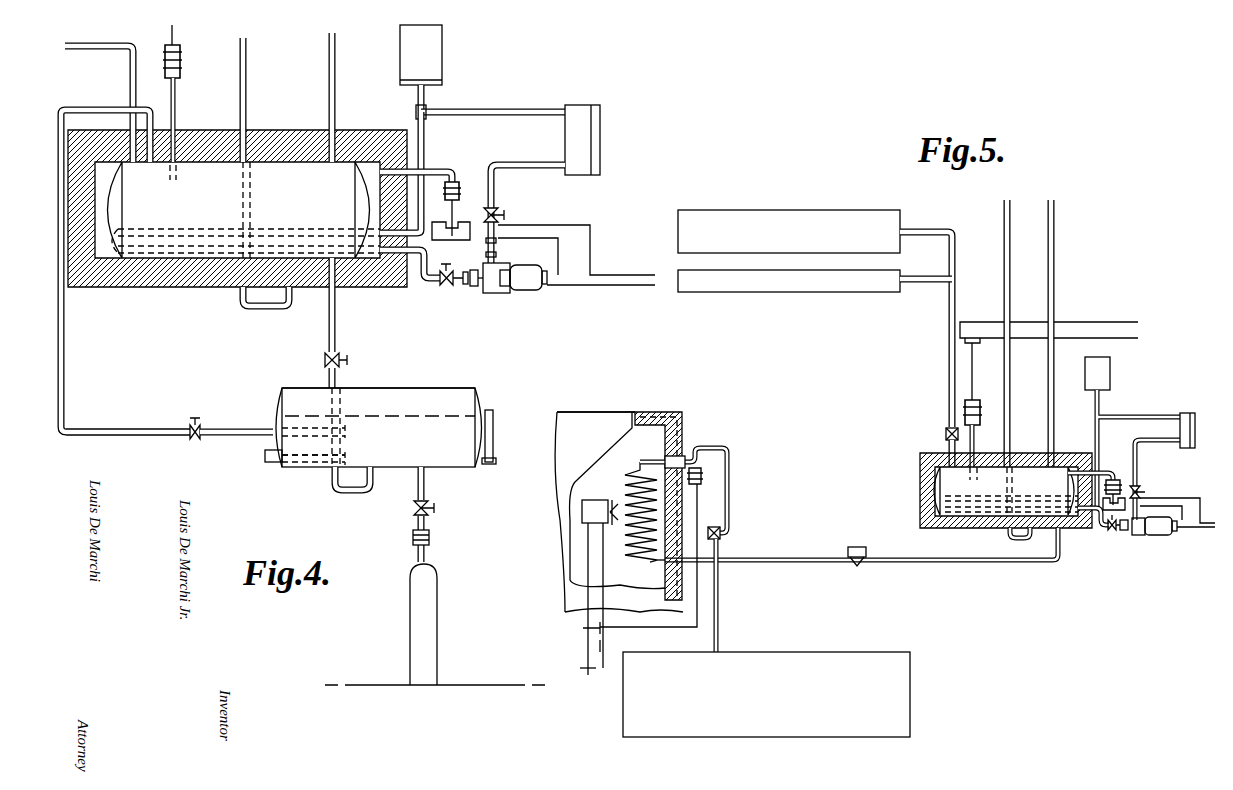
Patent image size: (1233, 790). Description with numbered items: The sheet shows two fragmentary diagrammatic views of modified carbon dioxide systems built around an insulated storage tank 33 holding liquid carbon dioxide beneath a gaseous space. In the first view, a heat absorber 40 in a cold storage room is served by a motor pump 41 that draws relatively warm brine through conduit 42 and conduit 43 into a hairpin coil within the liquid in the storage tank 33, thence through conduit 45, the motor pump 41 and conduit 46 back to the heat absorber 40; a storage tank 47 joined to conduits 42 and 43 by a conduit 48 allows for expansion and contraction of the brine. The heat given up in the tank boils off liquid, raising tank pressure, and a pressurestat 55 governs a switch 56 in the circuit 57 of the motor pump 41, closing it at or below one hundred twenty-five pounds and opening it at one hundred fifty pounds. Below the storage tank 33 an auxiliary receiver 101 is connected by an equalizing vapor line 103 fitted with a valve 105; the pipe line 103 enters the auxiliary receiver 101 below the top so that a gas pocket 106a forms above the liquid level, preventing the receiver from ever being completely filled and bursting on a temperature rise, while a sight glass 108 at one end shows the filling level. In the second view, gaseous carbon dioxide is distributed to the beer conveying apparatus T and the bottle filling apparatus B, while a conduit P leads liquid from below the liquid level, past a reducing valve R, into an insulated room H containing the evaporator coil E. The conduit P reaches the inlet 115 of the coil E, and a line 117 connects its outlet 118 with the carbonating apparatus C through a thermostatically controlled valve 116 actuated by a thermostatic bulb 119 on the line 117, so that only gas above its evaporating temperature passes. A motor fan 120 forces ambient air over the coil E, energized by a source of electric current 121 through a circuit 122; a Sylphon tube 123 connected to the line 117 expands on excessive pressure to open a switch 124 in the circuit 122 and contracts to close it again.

In FIG. 4, the storage tank 33 is at (237, 208).
In FIG. 5, the storage tank 33 is at (1006, 495).
In FIG. 4, the storage tank 47 is at (433, 40).
In FIG. 4, the conduit 48 is at (417, 99).
In FIG. 4, the conduit 42 is at (474, 104).
In FIG. 4, the conduit 43 is at (425, 140).
In FIG. 4, the heat absorber 40 is at (600, 138).
In FIG. 5, the heat absorber 40 is at (1140, 438).
In FIG. 4, the conduit 46 is at (548, 160).
In FIG. 4, the pressurestat 55 is at (459, 190).
In FIG. 4, the switch 56 is at (445, 240).
In FIG. 4, the conduit 45 is at (420, 287).
In FIG. 4, the motor pump 41 is at (527, 290).
In FIG. 4, the circuit 57 is at (640, 285).
In FIG. 4, the equalizing vapor line 103 is at (125, 440).
In FIG. 4, the valve 105 is at (196, 442).
In FIG. 4, the auxiliary receiver 101 is at (373, 439).
In FIG. 4, the gas pocket 106a is at (412, 391).
In FIG. 4, the sight glass 108 is at (494, 430).
In FIG. 4, the room to be cooled H is at (310, 475).
In FIG. 5, the room to be cooled H is at (628, 412).
In FIG. 5, the beer transporting or conveying apparatus T is at (815, 309).
In FIG. 5, the bottle filling apparatus B is at (815, 293).
In FIG. 5, the conduit P is at (898, 562).
In FIG. 5, the pressure reducing valve R is at (857, 568).
In FIG. 5, the thermostatic bulb 119 is at (683, 433).
In FIG. 5, the evaporator coil E is at (634, 510).
In FIG. 5, the inlet 115 is at (648, 563).
In FIG. 5, the outlet 118 is at (637, 462).
In FIG. 5, the thermostatically controlled valve 116 is at (720, 540).
In FIG. 5, the line 117 is at (720, 588).
In FIG. 5, the Sylphon tube 123 is at (703, 478).
In FIG. 5, the motor fan 120 is at (593, 500).
In FIG. 5, the switch 124 is at (574, 629).
In FIG. 5, the circuit 122 is at (608, 646).
In FIG. 5, the source of electric current 121 is at (574, 668).
In FIG. 5, the carbonating apparatus C is at (766, 706).